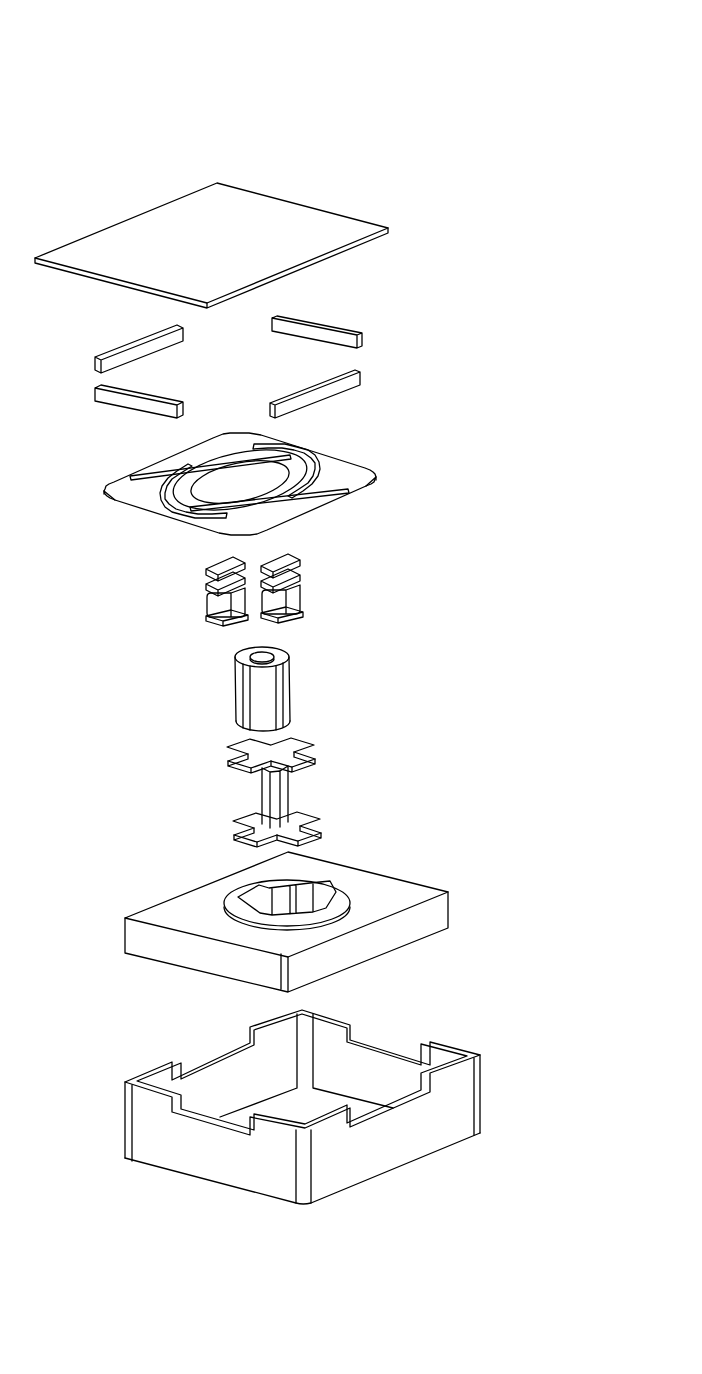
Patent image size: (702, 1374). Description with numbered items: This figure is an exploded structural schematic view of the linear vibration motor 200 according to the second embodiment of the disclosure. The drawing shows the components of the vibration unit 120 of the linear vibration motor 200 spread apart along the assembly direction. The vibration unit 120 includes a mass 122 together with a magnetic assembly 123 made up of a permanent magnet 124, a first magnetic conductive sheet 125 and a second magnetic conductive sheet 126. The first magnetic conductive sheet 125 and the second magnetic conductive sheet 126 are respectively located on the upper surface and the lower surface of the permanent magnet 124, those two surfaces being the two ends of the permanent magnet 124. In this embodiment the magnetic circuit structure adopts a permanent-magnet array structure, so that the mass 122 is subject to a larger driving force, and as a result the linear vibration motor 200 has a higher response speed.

The linear vibration motor 200 is at (306, 37).
The vibration unit 120 is at (516, 582).
The mass 122 is at (383, 886).
The coil assembly 123 is at (461, 554).
The permanent magnet 124 is at (300, 594).
The first magnetic conductive sheet 125 is at (293, 570).
The second magnetic conductive sheet 126 is at (302, 605).